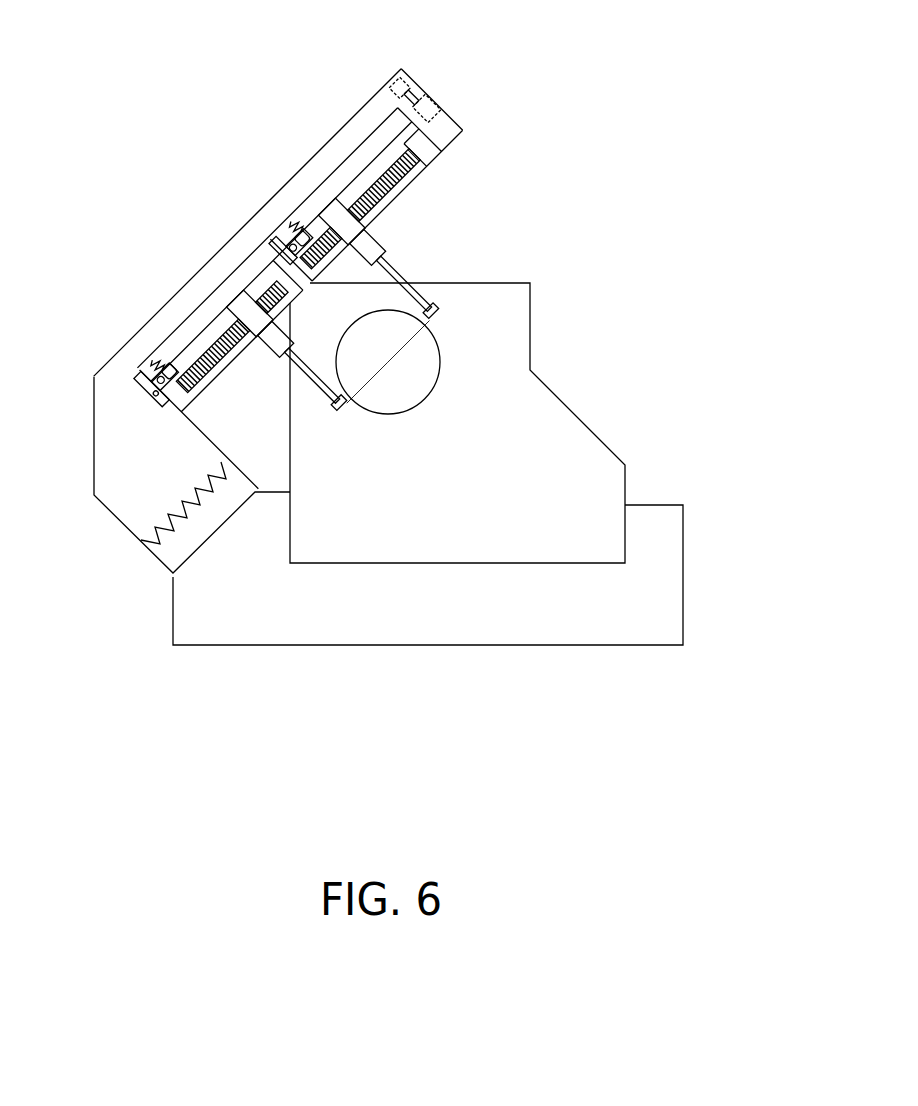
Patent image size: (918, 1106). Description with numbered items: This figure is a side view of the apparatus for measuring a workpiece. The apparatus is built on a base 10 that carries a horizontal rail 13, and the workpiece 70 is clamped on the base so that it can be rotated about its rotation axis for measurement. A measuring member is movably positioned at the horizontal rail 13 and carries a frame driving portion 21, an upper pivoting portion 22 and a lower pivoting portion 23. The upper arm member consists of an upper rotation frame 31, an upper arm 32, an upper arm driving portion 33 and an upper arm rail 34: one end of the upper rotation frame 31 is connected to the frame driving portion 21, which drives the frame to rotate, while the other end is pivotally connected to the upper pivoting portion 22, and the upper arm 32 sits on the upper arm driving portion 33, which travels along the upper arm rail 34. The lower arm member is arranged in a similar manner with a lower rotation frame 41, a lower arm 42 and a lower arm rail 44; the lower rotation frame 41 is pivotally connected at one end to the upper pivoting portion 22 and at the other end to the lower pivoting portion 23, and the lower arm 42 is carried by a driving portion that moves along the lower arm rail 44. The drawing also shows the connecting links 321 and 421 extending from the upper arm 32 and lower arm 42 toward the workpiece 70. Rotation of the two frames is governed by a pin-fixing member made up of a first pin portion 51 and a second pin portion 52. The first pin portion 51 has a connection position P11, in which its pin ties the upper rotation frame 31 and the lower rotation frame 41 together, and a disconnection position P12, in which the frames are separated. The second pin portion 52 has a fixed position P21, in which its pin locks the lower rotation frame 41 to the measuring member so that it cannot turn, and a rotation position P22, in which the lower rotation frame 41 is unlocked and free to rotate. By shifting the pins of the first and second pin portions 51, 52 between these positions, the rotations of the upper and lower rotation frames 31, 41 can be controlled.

The base 10 is at (662, 580).
The horizontal rail 13 is at (167, 550).
The frame driving portion 21 is at (405, 88).
The upper pivoting portion 22 is at (275, 246).
The lower pivoting portion 23 is at (157, 393).
The upper rotation frame 31 is at (346, 178).
The upper arm 32 is at (375, 257).
The first connecting rod 321 is at (432, 308).
The upper arm driving portion 33 is at (343, 226).
The upper arm rail 34 is at (388, 178).
The lower rotation frame 41 is at (188, 342).
The lower arm 42 is at (277, 347).
The second connecting rod 421 is at (342, 407).
The lower arm rail 44 is at (225, 338).
The first pin portion 51 is at (298, 228).
The second pin portion 52 is at (157, 375).
The workpiece 70 is at (430, 355).
The connection position P11 is at (280, 240).
The disconnection position P12 is at (297, 232).
The fixed position P21 is at (143, 373).
The rotation position P22 is at (165, 360).